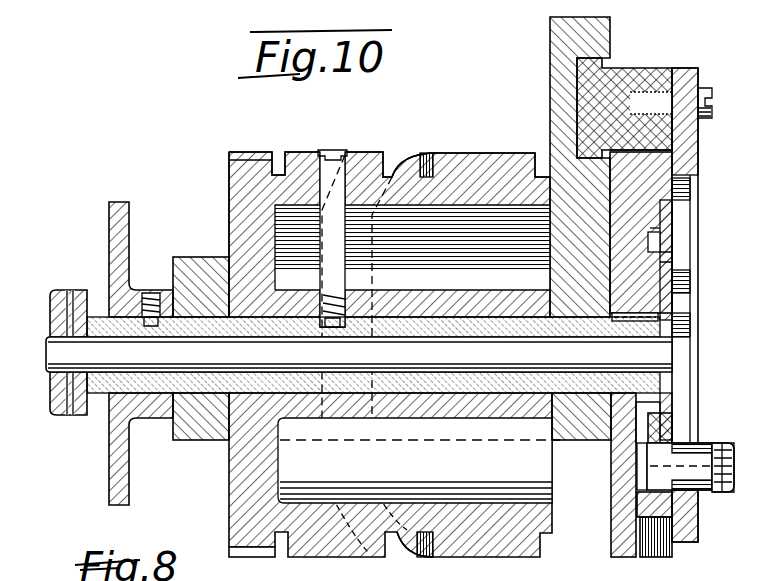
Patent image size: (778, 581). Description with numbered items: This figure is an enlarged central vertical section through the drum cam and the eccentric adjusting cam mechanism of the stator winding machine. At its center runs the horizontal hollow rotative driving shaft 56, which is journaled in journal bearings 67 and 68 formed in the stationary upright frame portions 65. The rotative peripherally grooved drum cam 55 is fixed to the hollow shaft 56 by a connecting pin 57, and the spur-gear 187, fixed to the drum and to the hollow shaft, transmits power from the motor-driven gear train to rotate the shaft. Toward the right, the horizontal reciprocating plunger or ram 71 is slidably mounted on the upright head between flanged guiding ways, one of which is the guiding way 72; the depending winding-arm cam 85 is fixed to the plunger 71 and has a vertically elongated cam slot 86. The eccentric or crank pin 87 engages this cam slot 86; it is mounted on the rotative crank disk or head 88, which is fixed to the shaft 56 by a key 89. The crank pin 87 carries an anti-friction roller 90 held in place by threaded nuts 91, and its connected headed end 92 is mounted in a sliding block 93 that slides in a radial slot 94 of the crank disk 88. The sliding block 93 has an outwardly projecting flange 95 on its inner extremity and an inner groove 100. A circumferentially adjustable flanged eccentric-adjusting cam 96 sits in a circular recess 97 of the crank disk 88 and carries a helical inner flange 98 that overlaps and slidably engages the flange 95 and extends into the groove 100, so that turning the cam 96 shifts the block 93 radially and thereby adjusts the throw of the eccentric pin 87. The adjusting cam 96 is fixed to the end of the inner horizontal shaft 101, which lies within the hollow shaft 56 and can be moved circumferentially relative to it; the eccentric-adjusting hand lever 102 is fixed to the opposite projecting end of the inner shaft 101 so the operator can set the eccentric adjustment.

The spur-gear 187 is at (247, 152).
The connecting pin 57 is at (322, 152).
The drum cam 55 is at (480, 152).
The upright frame portions 65 is at (550, 45).
The flanged guiding way 72 is at (603, 66).
The reciprocating plunger 71 is at (638, 74).
The winding-arm cam 85 is at (699, 162).
The cam slot 86 is at (692, 193).
The helical inner flange 98 is at (652, 232).
The circular recess 97 is at (660, 243).
The eccentric-adjusting cam 96 is at (668, 258).
The key 89 is at (662, 317).
The inner shaft 101 is at (658, 352).
The flange 95 is at (650, 404).
The inner groove 100 is at (668, 435).
The eccentric or crank pin 87 is at (662, 458).
The threaded nuts 91 is at (735, 452).
The anti-friction roller 90 is at (717, 488).
The journal bearing 68 is at (575, 437).
The headed end 92 is at (640, 470).
The sliding block 93 is at (652, 505).
The radial slot 94 is at (648, 550).
The crank disk 88 is at (625, 528).
The eccentric-adjusting hand lever 102 is at (54, 272).
The hollow driving shaft 56 is at (95, 402).
The journal bearing 67 is at (180, 441).